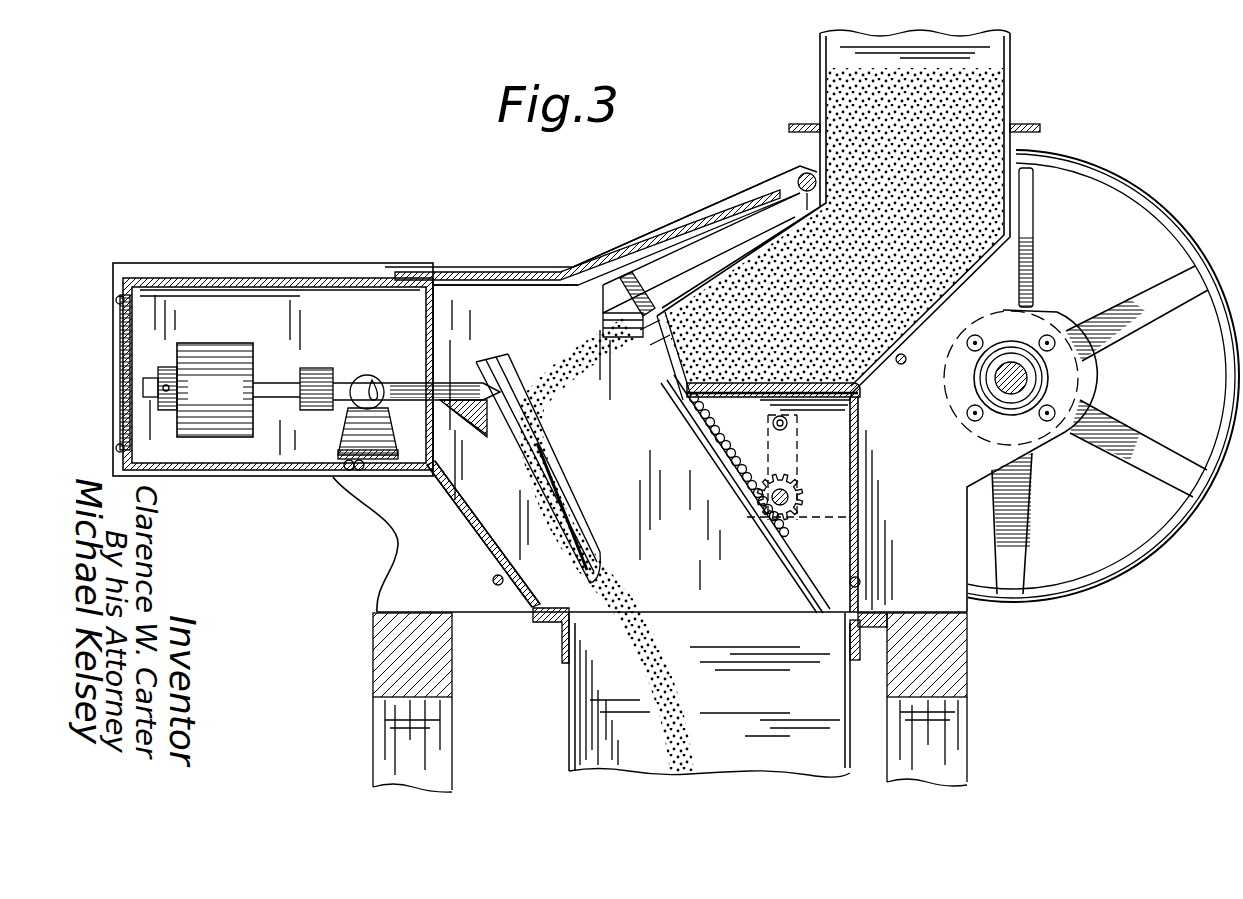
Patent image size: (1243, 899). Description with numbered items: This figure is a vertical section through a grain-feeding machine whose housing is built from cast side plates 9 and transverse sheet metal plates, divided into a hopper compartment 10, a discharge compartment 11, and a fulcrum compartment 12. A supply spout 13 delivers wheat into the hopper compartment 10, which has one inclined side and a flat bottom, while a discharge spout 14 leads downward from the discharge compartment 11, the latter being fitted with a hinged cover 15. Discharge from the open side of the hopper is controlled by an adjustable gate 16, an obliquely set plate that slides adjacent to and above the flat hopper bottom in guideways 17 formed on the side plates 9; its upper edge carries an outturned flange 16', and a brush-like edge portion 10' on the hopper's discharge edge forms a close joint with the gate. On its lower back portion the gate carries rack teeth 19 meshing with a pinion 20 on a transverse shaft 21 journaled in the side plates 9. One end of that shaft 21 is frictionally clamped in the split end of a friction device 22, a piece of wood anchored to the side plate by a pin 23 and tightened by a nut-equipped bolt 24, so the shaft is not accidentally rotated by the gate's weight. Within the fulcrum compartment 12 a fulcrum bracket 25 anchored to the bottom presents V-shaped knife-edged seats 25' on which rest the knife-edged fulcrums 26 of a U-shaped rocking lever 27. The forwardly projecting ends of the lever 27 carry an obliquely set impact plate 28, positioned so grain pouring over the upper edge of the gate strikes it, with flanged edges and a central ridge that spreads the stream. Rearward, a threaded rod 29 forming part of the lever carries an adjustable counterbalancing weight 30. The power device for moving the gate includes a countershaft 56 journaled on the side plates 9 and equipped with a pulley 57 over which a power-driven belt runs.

The cast side plates 9 is at (980, 168).
The hopper compartment 10 is at (1044, 237).
The brush-like edge portion 10' is at (701, 296).
The discharge compartment 11 is at (696, 515).
The fulcrum compartment 12 is at (240, 497).
The supply spout 13 is at (985, 55).
The discharge spout 14 is at (600, 697).
The hinged cover 15 is at (540, 270).
The gate 16 is at (734, 409).
The outturned flange 16' is at (640, 358).
The guideways 17 is at (790, 575).
The rack teeth 19 is at (728, 455).
The pinion 20 is at (798, 482).
The transverse shaft 21 is at (793, 497).
The friction device 22 is at (797, 440).
The pin 23 is at (812, 420).
The nut-equipped bolt 24 is at (850, 517).
The fulcrum bracket 25 is at (351, 439).
The knife-edged seats 25' is at (394, 366).
The knife-edged fulcrums 26 is at (370, 375).
The rocking lever 27 is at (425, 385).
The impact plate 28 is at (565, 520).
The threaded rod 29 is at (272, 383).
The counterbalancing weight 30 is at (198, 390).
The countershaft 56 is at (1016, 372).
The pulley 57 is at (1168, 284).